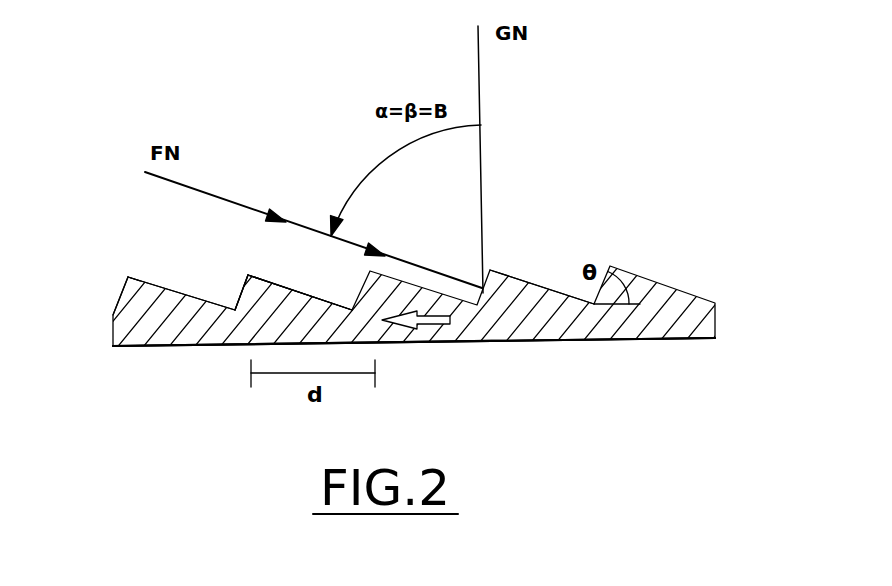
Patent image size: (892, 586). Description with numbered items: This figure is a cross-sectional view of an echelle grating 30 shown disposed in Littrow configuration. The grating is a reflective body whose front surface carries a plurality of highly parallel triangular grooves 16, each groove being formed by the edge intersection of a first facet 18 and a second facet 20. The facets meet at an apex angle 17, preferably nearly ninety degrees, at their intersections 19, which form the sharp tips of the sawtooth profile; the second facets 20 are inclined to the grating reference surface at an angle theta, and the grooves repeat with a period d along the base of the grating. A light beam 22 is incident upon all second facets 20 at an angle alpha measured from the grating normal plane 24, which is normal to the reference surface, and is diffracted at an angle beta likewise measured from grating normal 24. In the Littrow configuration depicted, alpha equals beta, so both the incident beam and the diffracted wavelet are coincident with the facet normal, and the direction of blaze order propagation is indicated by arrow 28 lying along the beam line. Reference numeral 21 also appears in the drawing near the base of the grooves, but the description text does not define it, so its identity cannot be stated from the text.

The triangular grooves 16 is at (288, 258).
The apex angle 17 is at (542, 283).
The first facet 18 is at (142, 280).
The facet intersection 19 is at (129, 275).
The second facet 20 is at (120, 293).
The base between teeth 21 is at (212, 326).
The light beam 22 is at (352, 240).
The grating normal plane 24 is at (480, 88).
The arrow 28 is at (272, 218).
The echelle grating 30 is at (684, 220).